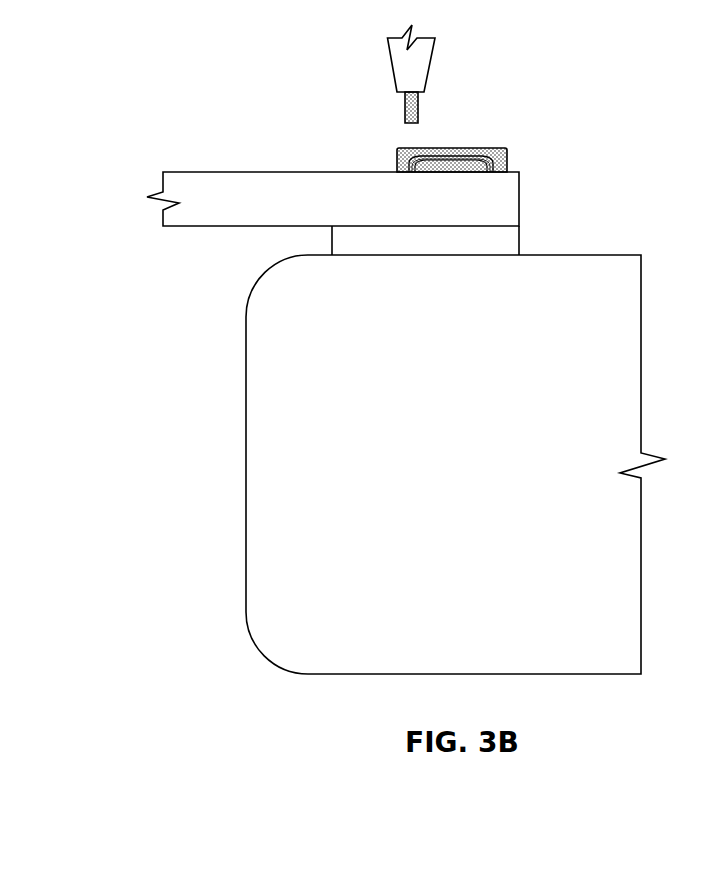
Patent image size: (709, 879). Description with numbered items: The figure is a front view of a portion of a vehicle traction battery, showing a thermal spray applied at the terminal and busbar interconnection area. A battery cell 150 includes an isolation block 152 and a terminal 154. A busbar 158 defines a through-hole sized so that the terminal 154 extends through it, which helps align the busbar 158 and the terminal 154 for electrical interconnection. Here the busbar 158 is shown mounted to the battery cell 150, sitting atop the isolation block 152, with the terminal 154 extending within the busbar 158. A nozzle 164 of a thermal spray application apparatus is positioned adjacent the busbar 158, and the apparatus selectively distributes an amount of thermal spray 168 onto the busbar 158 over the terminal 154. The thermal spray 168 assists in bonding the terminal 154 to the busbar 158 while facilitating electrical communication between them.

The battery cell 150 is at (244, 402).
The isolation block 152 is at (520, 243).
The terminal 154 is at (450, 147).
The busbar 158 is at (520, 197).
The nozzle 164 is at (434, 59).
The thermal spray 168 is at (498, 147).